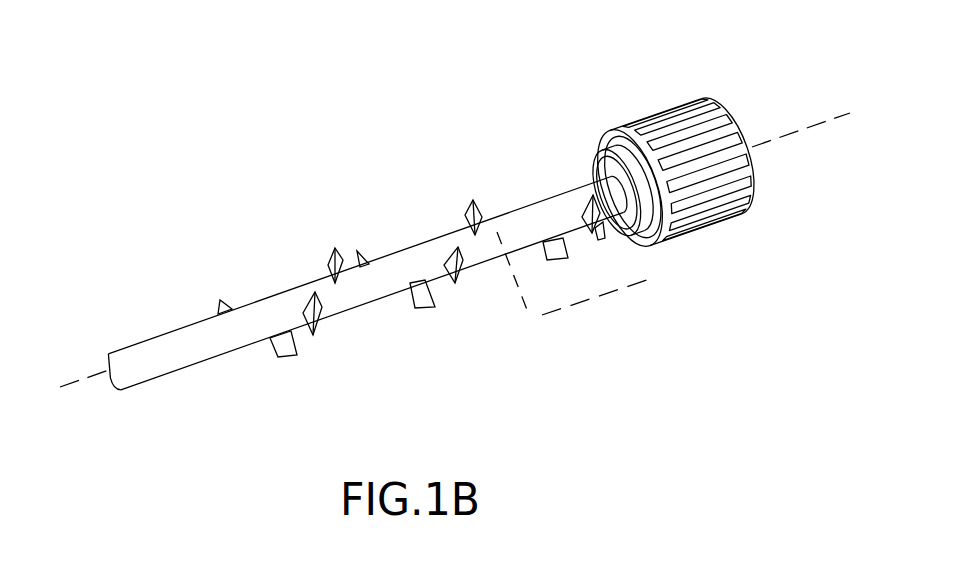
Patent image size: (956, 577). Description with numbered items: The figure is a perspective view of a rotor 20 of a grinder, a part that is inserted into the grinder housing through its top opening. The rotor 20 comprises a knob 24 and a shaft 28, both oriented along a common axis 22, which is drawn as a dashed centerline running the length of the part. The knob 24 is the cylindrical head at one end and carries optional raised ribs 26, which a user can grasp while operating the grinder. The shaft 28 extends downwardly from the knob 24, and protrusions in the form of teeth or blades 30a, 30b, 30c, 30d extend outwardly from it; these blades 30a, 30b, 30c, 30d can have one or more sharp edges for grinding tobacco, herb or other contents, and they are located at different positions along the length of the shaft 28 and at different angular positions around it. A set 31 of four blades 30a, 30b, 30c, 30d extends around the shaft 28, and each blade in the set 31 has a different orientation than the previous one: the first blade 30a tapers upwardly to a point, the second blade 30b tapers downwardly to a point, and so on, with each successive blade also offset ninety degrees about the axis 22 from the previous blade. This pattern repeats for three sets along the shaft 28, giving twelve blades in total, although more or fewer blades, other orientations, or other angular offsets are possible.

The rotor 20 is at (361, 112).
The axis 22 is at (803, 130).
The knob 24 is at (697, 87).
The raised ribs 26 is at (648, 130).
The shaft 28 is at (405, 254).
The first blade 30a is at (600, 180).
The second blade 30b is at (601, 240).
The third blade 30c is at (545, 262).
The fourth blade 30d is at (497, 219).
The set of blades 31 is at (610, 292).